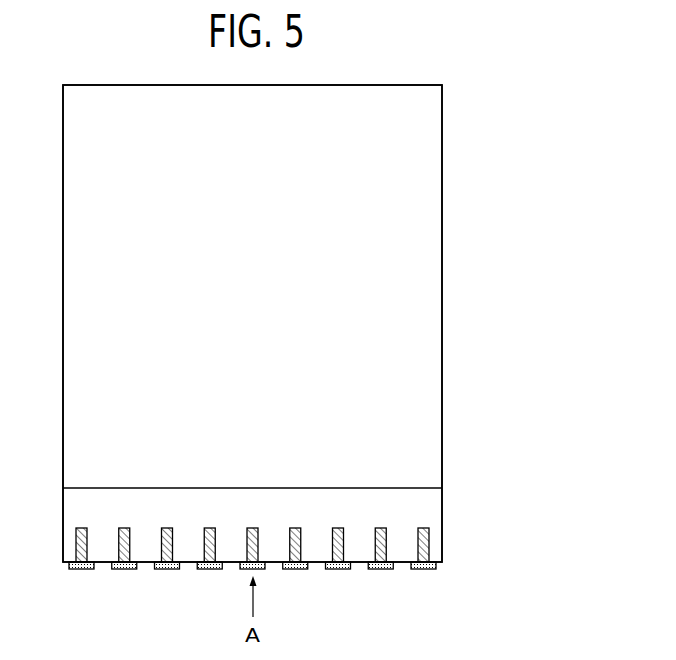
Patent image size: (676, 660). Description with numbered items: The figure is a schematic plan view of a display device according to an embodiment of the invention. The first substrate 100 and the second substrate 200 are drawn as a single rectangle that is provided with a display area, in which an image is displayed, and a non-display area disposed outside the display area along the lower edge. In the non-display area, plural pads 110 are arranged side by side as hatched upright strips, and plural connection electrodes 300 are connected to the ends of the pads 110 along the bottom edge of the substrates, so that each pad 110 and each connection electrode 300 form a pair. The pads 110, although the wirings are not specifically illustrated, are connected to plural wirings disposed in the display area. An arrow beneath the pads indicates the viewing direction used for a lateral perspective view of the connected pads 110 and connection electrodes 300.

The first substrate 100 is at (442, 188).
The second substrate 200 is at (252, 323).
The pad 110 is at (429, 531).
The connection electrode 300 is at (436, 565).